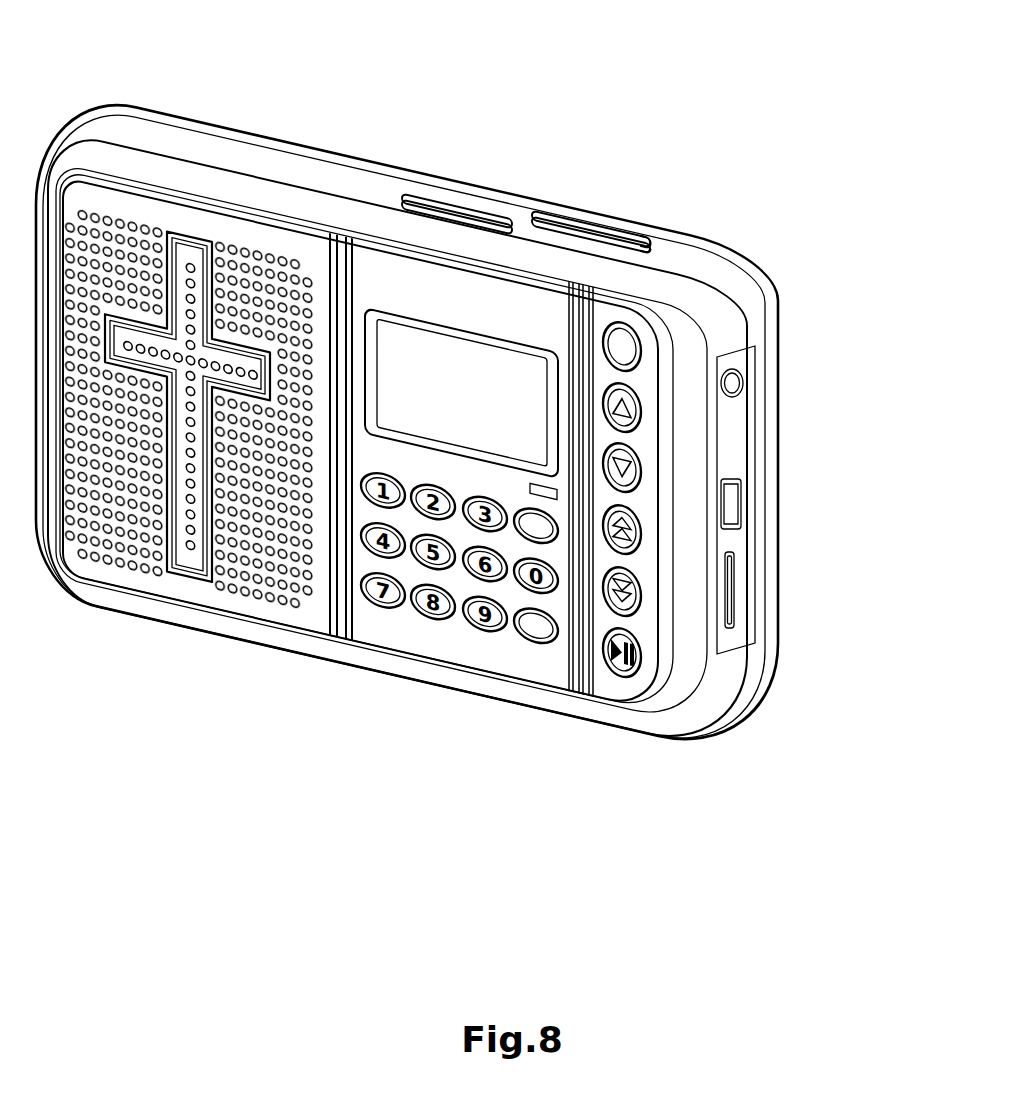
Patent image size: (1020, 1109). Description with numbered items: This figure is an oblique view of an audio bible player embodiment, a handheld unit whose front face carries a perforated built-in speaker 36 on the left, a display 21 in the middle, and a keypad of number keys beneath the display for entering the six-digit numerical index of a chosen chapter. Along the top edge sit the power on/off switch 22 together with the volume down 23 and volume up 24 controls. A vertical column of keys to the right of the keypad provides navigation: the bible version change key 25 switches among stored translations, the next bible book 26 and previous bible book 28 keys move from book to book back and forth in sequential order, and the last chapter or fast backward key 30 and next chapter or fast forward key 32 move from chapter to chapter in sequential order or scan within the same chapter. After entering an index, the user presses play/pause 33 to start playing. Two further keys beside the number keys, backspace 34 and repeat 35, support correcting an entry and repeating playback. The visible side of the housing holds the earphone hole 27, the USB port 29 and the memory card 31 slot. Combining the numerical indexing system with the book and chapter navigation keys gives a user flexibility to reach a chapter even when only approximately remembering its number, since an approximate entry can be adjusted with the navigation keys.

The display 21 is at (440, 375).
The power on/off switch 22 is at (473, 185).
The volume down 23 is at (568, 203).
The volume up 24 is at (630, 222).
The bible version change key 25 is at (633, 335).
The next bible book 26 is at (633, 393).
The earphone hole 27 is at (748, 375).
The previous bible book 28 is at (640, 473).
The USB port 29 is at (750, 497).
The last chapter or fast backward key 30 is at (640, 530).
The memory card 31 is at (737, 590).
The next chapter or fast forward key 32 is at (637, 603).
The play/pause 33 is at (637, 663).
The backspace 34 is at (533, 625).
The repeat 35 is at (533, 522).
The built-in speaker 36 is at (125, 462).